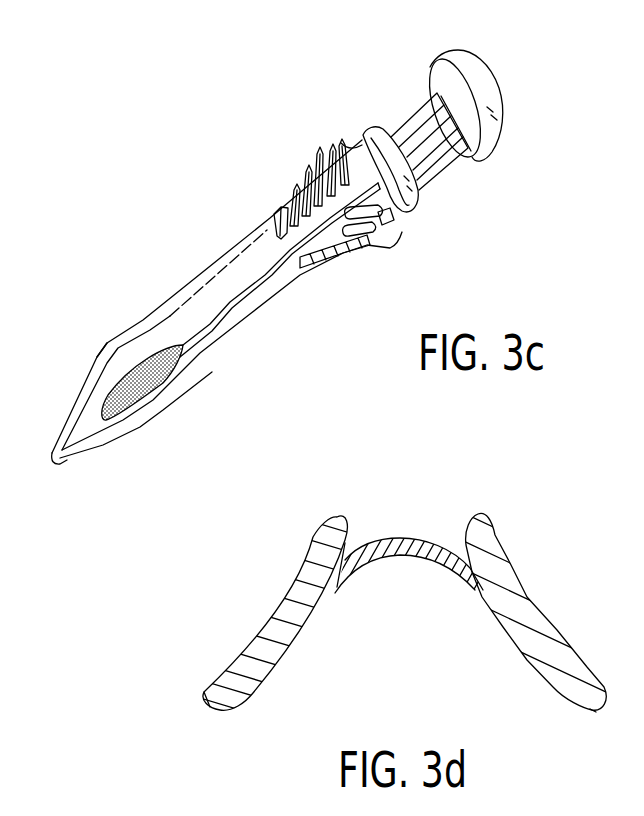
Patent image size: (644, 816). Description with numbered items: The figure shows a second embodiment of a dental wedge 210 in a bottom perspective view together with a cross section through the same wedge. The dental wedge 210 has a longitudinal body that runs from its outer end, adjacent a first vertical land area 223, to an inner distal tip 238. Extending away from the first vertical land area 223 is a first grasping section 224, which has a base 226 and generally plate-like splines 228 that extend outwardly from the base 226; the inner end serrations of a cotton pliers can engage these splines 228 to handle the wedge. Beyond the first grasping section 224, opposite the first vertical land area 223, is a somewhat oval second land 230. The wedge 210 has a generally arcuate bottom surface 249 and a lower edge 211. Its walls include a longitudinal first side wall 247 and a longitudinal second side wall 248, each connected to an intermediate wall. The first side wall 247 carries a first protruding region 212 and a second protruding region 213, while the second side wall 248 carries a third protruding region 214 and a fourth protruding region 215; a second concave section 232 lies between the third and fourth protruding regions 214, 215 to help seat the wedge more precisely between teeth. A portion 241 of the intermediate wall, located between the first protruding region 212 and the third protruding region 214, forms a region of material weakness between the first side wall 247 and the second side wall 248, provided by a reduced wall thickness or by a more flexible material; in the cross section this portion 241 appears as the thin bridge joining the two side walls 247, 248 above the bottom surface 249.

In FIG. 3C, the dental wedge 210 is at (214, 194).
In FIG. 3D, the dental wedge 210 is at (356, 485).
In FIG. 3D, the lower edge 211 is at (210, 707).
In FIG. 3C, the first protruding region 212 is at (160, 430).
In FIG. 3C, the second protruding region 213 is at (396, 239).
In FIG. 3C, the third protruding region 214 is at (92, 336).
In FIG. 3C, the fourth protruding region 215 is at (326, 128).
In FIG. 3C, the first vertical land area 223 is at (366, 148).
In FIG. 3C, the first grasping section 224 is at (451, 185).
In FIG. 3C, the base 226 is at (435, 113).
In FIG. 3C, the splines 228 is at (455, 157).
In FIG. 3C, the second land 230 is at (474, 83).
In FIG. 3C, the second concave section 232 is at (241, 236).
In FIG. 3C, the inner distal tip 238 is at (50, 457).
In FIG. 3C, the portion of the intermediate wall 241 is at (112, 420).
In FIG. 3D, the portion of the intermediate wall 241 is at (417, 538).
In FIG. 3D, the first side wall 247 is at (277, 613).
In FIG. 3C, the second side wall 248 is at (216, 277).
In FIG. 3D, the second side wall 248 is at (533, 615).
In FIG. 3C, the bottom surface 249 is at (217, 307).
In FIG. 3D, the bottom surface 249 is at (442, 569).